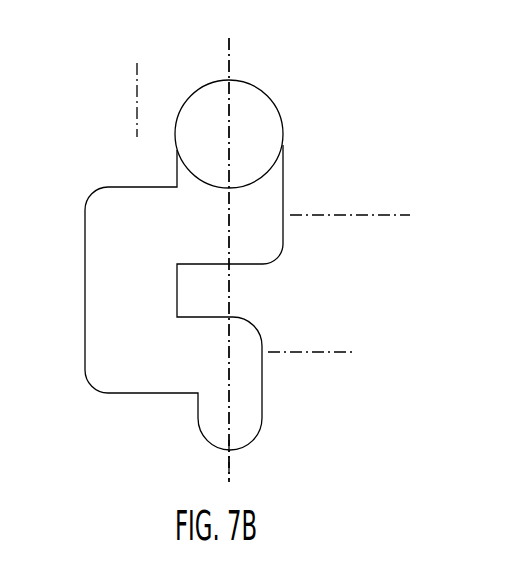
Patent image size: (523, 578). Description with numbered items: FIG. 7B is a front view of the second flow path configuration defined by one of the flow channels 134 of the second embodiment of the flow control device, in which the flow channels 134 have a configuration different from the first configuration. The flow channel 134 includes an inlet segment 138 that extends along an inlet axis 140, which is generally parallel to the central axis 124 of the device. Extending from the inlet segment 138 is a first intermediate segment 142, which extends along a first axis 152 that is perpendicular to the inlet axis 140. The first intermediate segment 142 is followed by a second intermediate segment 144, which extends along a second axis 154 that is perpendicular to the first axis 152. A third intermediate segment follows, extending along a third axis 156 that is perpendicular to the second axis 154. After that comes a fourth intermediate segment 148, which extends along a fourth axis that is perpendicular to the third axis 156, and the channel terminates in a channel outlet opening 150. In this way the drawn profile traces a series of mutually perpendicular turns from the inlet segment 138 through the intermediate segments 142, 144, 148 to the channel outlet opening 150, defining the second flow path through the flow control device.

The flow channel 134 is at (199, 58).
The central axis 124 is at (231, 62).
The second axis 154 is at (136, 96).
The channel outlet opening 150 is at (262, 112).
The fourth intermediate segment 148 is at (268, 193).
The third axis 156 is at (368, 210).
The second intermediate segment 144 is at (102, 277).
The first intermediate segment 142 is at (212, 253).
The first axis 152 is at (328, 345).
The inlet segment 138 is at (242, 419).
The inlet axis 140 is at (232, 456).